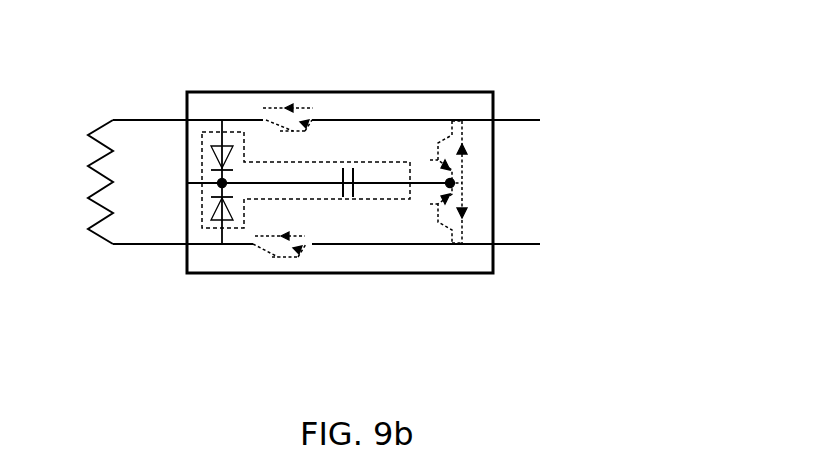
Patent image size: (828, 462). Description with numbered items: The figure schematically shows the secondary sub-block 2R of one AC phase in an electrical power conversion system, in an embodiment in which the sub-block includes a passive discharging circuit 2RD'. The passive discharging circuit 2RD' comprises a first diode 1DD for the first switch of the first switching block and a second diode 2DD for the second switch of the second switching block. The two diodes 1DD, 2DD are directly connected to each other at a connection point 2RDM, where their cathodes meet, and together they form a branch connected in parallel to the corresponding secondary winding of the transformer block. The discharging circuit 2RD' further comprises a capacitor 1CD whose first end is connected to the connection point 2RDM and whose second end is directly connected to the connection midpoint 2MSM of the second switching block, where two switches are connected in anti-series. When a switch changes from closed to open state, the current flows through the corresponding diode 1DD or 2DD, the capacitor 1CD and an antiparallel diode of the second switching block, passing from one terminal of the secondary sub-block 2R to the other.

The first diode 1DD is at (200, 158).
The second diode 2DD is at (208, 210).
The connection point 2RDM is at (218, 183).
The capacitor 1CD is at (347, 165).
The connection midpoint 2MSM is at (454, 182).
The passive discharging circuit 2RD' is at (318, 228).
The secondary sub-block 2R is at (452, 273).